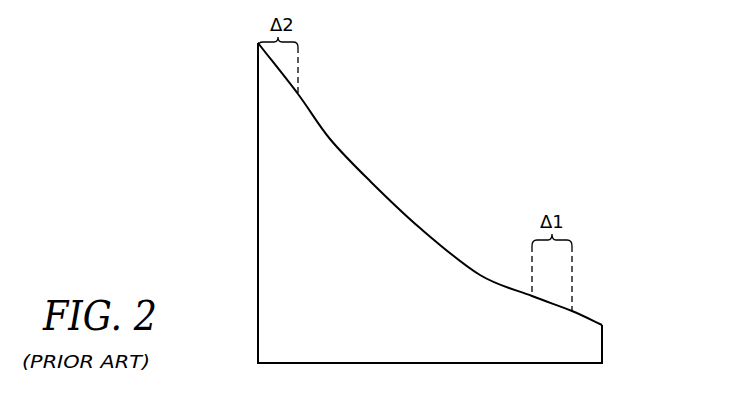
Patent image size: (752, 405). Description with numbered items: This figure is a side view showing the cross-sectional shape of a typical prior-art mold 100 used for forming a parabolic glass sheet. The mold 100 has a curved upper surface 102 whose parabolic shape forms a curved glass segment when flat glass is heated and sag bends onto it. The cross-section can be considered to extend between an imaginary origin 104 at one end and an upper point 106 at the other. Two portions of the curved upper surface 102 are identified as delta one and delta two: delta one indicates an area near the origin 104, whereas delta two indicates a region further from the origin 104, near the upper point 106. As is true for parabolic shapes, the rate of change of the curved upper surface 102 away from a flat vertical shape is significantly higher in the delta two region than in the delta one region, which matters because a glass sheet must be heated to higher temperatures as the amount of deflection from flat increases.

The mold 100 is at (206, 162).
The upper surface 102 is at (370, 181).
The origin 104 is at (602, 325).
The upper point 106 is at (258, 43).